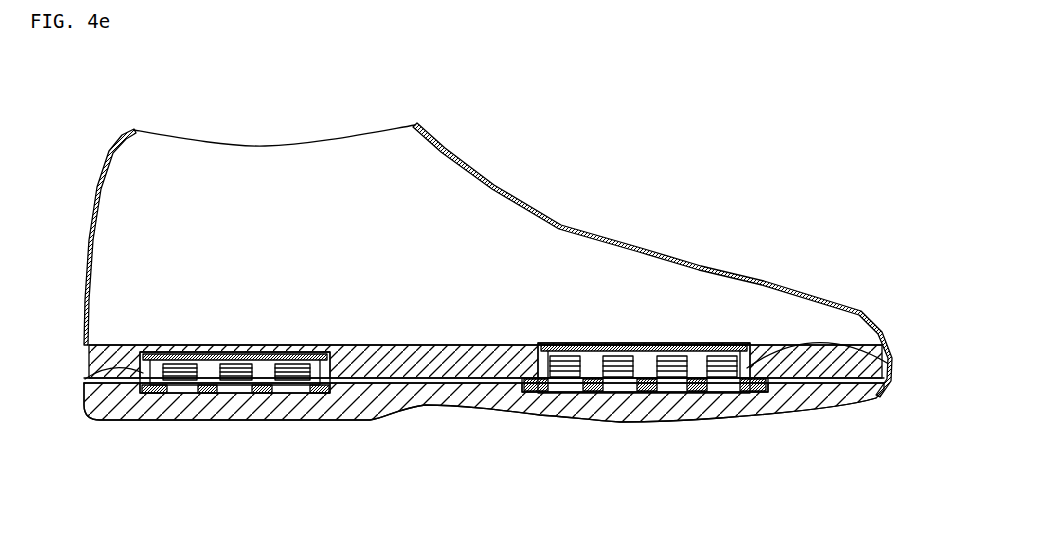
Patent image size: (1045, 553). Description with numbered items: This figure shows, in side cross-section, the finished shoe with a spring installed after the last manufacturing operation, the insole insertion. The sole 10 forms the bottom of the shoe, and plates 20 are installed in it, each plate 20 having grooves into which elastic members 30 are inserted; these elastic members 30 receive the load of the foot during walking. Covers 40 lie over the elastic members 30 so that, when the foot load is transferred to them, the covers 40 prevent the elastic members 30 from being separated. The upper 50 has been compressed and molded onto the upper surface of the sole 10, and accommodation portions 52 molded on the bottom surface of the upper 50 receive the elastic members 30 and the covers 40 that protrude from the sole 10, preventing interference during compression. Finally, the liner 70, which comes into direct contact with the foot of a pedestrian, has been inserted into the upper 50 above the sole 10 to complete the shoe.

The sole 10 is at (443, 397).
The plate 20 is at (152, 388).
The elastic member 30 is at (227, 398).
The cover 40 is at (87, 378).
The upper 50 is at (578, 236).
The accommodation portion 52 is at (713, 340).
The liner 70 is at (428, 350).